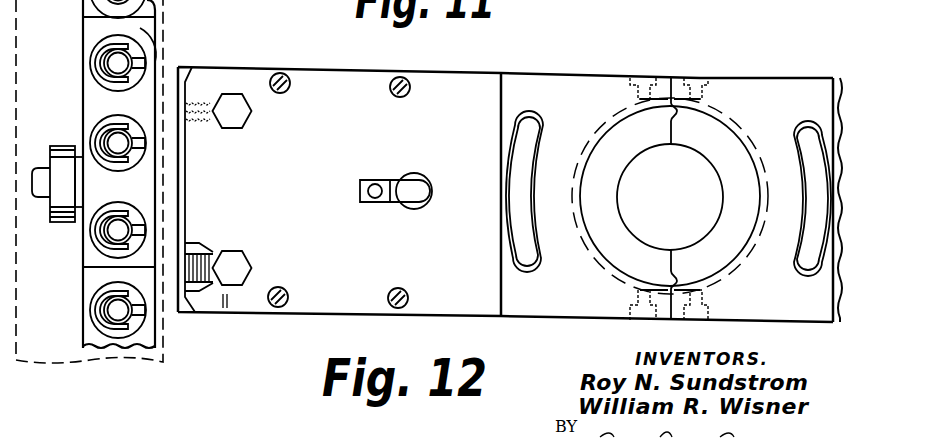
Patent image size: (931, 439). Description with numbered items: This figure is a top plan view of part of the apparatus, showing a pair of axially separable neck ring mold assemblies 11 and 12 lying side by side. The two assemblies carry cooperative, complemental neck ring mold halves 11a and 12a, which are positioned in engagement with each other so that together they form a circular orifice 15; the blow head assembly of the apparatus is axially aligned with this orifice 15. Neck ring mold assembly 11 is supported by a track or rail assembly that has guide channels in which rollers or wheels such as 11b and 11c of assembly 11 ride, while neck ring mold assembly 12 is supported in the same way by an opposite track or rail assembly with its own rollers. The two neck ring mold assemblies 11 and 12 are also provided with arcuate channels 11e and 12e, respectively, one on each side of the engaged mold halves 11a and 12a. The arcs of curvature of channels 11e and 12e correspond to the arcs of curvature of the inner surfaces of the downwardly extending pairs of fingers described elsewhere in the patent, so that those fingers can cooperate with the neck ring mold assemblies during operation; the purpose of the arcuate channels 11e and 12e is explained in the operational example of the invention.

The neck ring mold assembly 11 is at (561, 113).
The neck ring mold assembly 12 is at (782, 118).
The neck ring mold half 11a is at (614, 177).
The roller 11b is at (100, 137).
The roller 11c is at (63, 146).
The arcuate channel 11e is at (514, 198).
The neck ring mold half 12a is at (725, 272).
The arcuate channel 12e is at (809, 255).
The circular orifice 15 is at (689, 199).